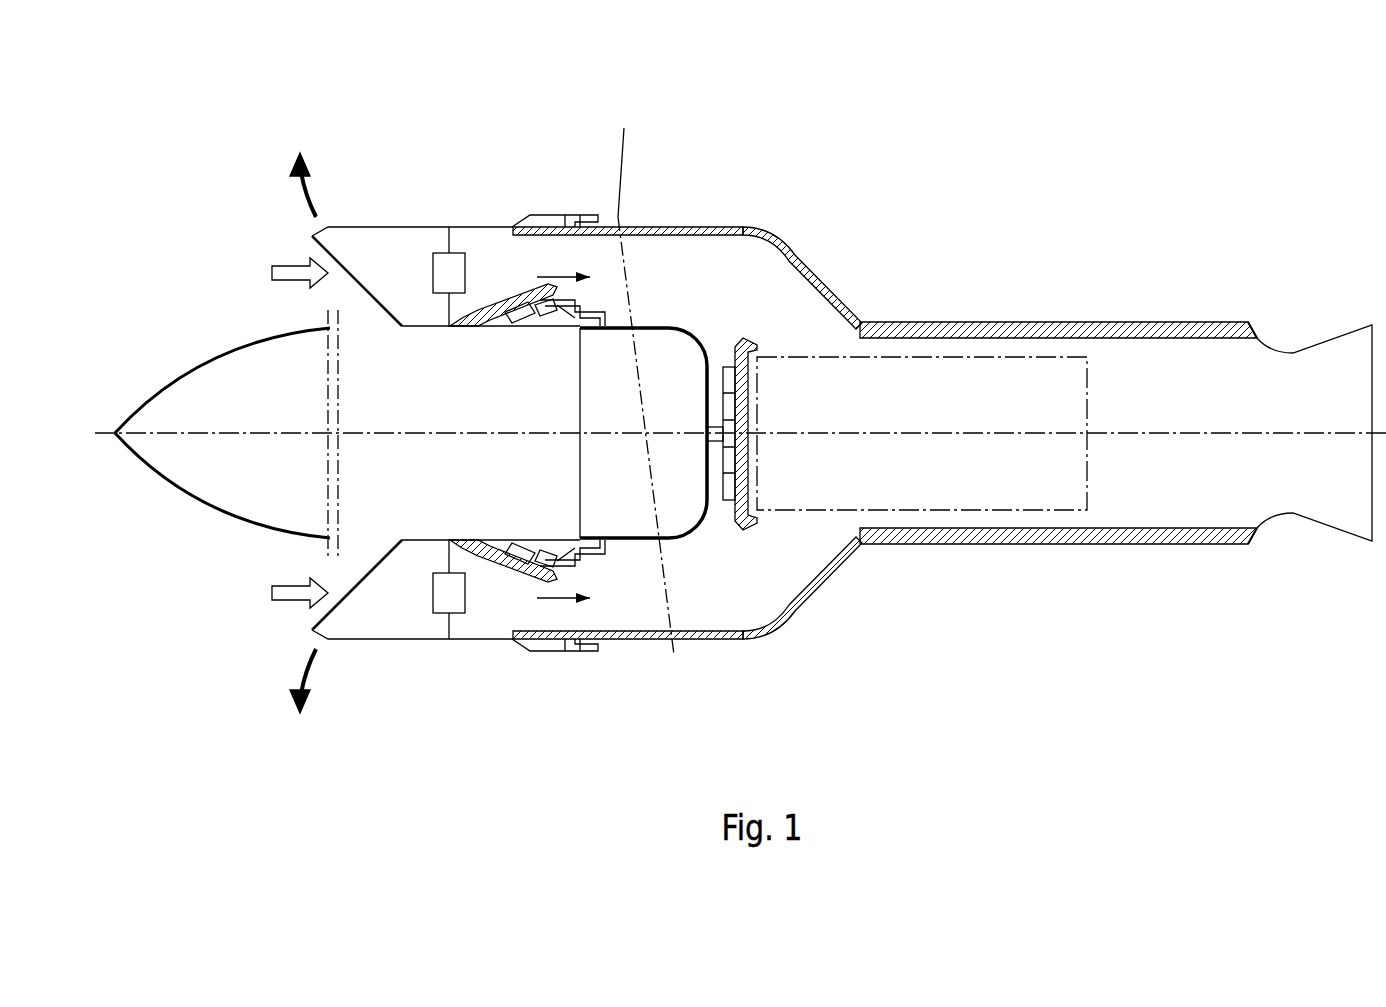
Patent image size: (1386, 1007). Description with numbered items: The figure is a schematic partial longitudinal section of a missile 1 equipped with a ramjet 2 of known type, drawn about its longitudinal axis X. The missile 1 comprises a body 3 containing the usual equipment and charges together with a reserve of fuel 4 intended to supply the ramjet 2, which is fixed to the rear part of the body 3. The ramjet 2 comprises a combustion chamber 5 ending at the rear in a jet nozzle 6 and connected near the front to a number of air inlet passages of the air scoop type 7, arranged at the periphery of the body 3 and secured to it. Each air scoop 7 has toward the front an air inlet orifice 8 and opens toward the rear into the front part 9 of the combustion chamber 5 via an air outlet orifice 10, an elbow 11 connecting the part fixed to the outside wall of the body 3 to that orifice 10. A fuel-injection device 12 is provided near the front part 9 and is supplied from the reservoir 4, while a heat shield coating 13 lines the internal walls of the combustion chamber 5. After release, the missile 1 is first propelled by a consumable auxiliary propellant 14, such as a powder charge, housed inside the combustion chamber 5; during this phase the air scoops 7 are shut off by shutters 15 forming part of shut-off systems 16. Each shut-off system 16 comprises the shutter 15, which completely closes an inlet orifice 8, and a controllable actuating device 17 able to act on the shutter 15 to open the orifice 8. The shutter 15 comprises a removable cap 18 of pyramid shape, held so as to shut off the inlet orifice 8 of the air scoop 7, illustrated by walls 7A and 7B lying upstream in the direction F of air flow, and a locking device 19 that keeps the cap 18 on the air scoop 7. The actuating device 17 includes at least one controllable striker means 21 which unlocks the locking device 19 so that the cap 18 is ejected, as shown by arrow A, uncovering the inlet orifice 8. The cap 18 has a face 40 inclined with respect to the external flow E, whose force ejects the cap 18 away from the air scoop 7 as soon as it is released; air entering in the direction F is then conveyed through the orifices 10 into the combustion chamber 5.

The missile 1 is at (198, 540).
The ramjet 2 is at (1142, 312).
The body 3 is at (268, 366).
The reserve of fuel 4 is at (597, 428).
The combustion chamber 5 is at (1135, 513).
The jet nozzle 6 is at (1327, 512).
The air scoop 7 is at (582, 263).
The wall of the air scoop 7A is at (660, 226).
The wall of the air scoop 7B is at (608, 314).
The air inlet orifice 8 is at (500, 693).
The front part of the combustion chamber 9 is at (842, 378).
The air outlet orifice 10 is at (790, 338).
The elbow 11 is at (792, 245).
The fuel-injection device 12 is at (722, 515).
The heat shield coating 13 is at (1245, 330).
The consumable auxiliary propellant 14 is at (973, 505).
The shutter 15 is at (481, 176).
The shut-off system 16 is at (428, 340).
The controllable actuating device 17 is at (516, 344).
The removable cap 18 is at (390, 227).
The locking device 19 is at (452, 283).
The controllable striker means 21 is at (540, 341).
The inclined face 40 is at (348, 286).
The arrow indicating ejection of the cap A is at (312, 198).
The external flow E is at (283, 265).
The direction of air flow in the air scoop F is at (550, 280).
The longitudinal axis X is at (734, 416).